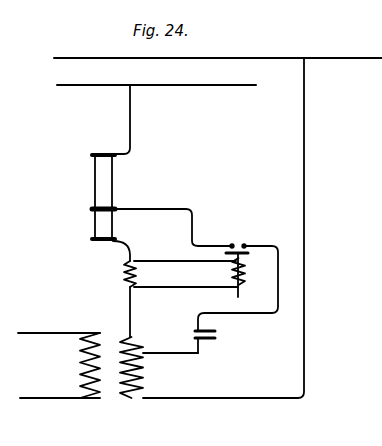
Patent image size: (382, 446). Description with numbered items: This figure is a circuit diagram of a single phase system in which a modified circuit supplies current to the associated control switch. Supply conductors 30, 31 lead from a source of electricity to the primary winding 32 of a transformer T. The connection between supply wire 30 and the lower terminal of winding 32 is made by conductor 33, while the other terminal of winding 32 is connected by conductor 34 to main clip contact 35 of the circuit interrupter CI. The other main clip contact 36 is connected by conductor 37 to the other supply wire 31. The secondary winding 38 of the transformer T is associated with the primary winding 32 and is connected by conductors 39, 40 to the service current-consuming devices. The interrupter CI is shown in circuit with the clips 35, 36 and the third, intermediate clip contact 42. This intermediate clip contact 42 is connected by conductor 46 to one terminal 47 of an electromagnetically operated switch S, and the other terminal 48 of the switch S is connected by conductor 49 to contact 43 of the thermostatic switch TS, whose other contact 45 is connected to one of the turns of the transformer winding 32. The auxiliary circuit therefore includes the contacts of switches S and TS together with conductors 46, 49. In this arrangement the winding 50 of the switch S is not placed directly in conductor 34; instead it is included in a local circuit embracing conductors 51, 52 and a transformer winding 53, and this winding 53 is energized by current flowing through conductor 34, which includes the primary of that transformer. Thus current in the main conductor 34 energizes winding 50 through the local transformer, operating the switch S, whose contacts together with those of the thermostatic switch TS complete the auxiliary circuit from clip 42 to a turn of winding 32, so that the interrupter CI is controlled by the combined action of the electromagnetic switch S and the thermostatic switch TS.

The supply conductor 30 is at (68, 58).
The supply conductor 31 is at (83, 85).
The primary winding 32 is at (143, 382).
The conductor 33 is at (305, 216).
The conductor 34 is at (131, 313).
The main clip contact 35 is at (95, 243).
The main clip contact 36 is at (103, 150).
The conductor 37 is at (131, 118).
The secondary winding 38 is at (80, 365).
The conductor 39 is at (27, 333).
The conductor 40 is at (30, 399).
The intermediate clip contact 42 is at (92, 208).
The contact of thermostatic switch 43 is at (216, 331).
The contact of thermostatic switch 45 is at (212, 342).
The conductor 46 is at (190, 209).
The terminal of switch S 47 is at (243, 232).
The terminal of switch S 48 is at (244, 246).
The conductor 49 is at (278, 285).
The winding of switch S 50 is at (242, 283).
The conductor 51 is at (190, 261).
The conductor 52 is at (186, 288).
The transformer winding 53 is at (137, 273).
The circuit interrupter CI is at (97, 179).
The electromagnetically operated switch S is at (244, 264).
The transformer T is at (112, 395).
The thermostatic switch TS is at (216, 338).